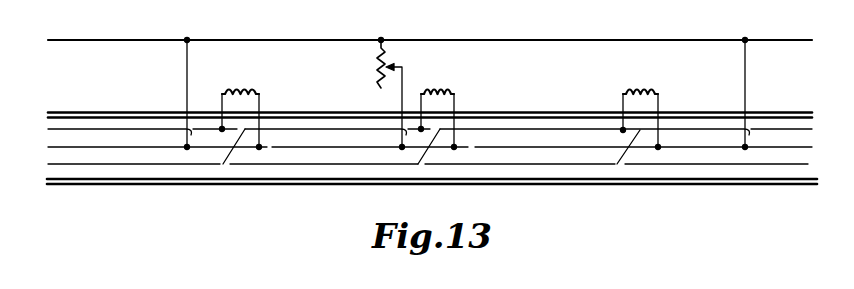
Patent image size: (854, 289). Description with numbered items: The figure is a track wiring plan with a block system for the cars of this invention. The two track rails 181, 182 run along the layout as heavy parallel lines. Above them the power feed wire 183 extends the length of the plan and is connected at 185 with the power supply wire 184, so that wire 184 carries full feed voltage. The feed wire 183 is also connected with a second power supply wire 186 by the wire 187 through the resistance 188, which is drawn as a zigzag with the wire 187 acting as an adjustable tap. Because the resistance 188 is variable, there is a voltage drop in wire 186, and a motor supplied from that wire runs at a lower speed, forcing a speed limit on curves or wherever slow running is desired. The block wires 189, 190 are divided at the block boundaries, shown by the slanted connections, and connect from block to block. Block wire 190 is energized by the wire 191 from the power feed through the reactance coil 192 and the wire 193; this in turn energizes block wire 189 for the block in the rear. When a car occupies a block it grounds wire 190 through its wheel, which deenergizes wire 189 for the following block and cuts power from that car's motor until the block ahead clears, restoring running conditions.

The track rail 181 is at (430, 104).
The track rail 182 is at (50, 184).
The power feed wire 183 is at (430, 30).
The power supply wire 184 is at (107, 143).
The connection 185 is at (188, 66).
The power supply wire 186 is at (378, 146).
The wire 187 is at (405, 77).
The resistance 188 is at (375, 70).
The block wire 189 is at (150, 161).
The block wire 190 is at (360, 107).
The wire 191 is at (261, 97).
The reactance coil 192 is at (236, 93).
The wire 193 is at (209, 109).